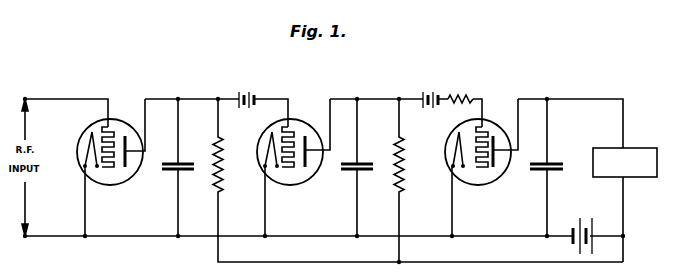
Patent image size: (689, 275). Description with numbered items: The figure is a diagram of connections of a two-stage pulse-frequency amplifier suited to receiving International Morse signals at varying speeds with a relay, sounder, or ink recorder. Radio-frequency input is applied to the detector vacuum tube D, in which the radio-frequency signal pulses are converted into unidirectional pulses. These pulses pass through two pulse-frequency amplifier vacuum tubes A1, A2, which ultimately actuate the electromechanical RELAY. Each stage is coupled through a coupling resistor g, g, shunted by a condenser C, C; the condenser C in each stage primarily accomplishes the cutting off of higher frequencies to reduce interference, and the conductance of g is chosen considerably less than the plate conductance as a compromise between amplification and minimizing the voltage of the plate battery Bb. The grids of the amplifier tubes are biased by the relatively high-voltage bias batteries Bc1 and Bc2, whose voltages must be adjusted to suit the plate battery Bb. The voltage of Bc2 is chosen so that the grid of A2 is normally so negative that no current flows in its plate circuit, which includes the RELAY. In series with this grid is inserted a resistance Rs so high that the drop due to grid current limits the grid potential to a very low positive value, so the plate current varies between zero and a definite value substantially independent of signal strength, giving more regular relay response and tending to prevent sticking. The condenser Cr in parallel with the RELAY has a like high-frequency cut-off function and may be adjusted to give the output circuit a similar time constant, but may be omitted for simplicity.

The detector vacuum tube D is at (85, 123).
The pulse-frequency amplifier vacuum tube A1 is at (312, 125).
The pulse-frequency amplifier vacuum tube A2 is at (510, 124).
The condenser C is at (268, 167).
The coupling resistor g is at (317, 167).
The bias battery Bc1 is at (263, 94).
The bias battery Bc2 is at (413, 94).
The resistance Rs is at (460, 91).
The condenser Cr is at (550, 167).
The plate battery Bb is at (594, 235).
The relay RELAY is at (625, 162).